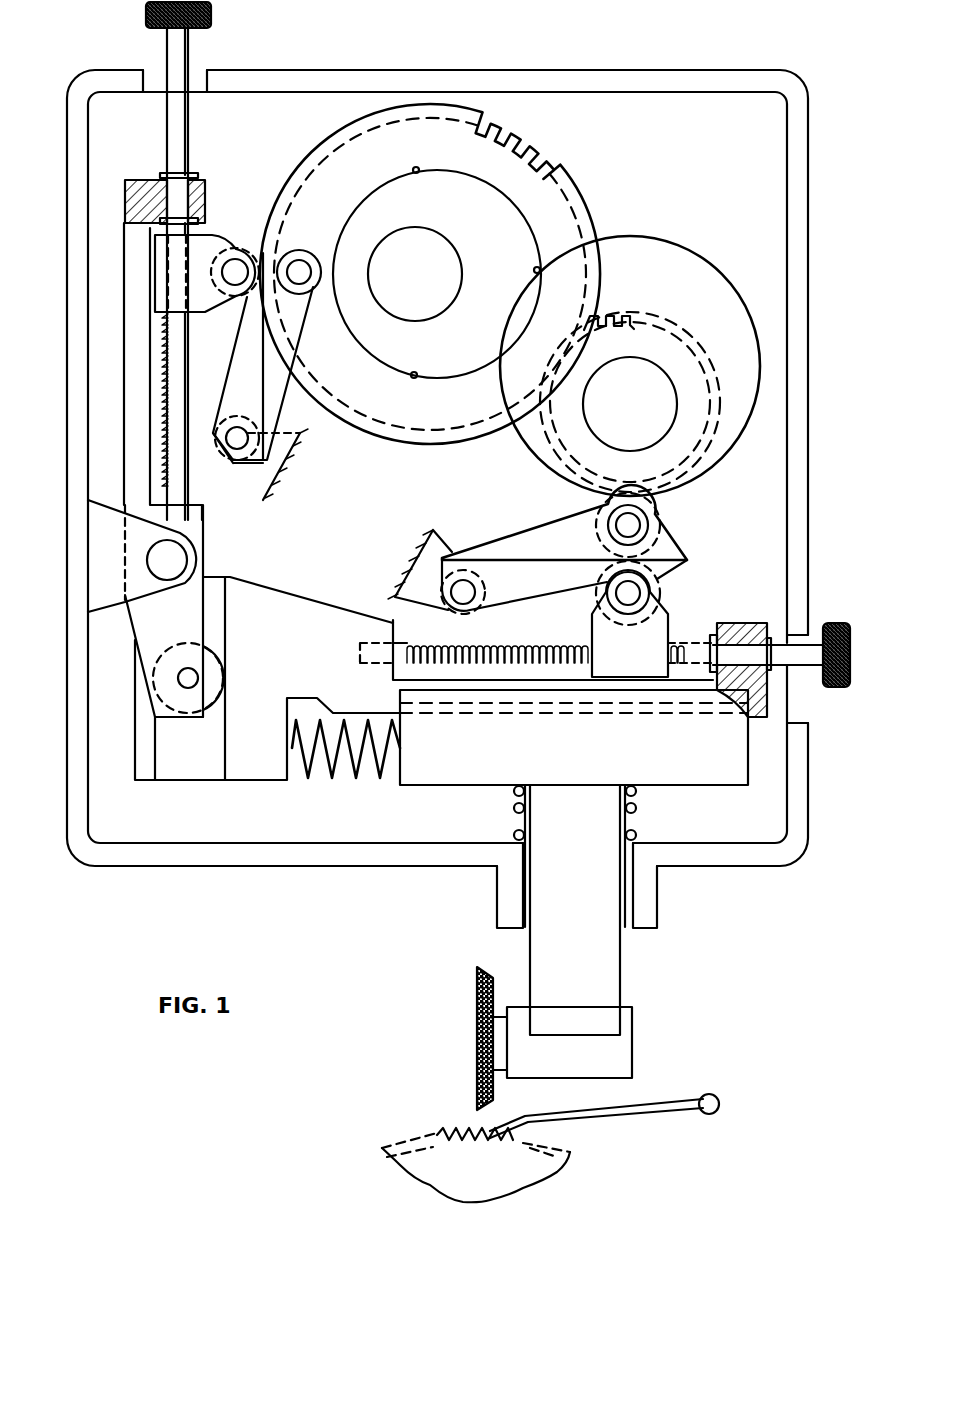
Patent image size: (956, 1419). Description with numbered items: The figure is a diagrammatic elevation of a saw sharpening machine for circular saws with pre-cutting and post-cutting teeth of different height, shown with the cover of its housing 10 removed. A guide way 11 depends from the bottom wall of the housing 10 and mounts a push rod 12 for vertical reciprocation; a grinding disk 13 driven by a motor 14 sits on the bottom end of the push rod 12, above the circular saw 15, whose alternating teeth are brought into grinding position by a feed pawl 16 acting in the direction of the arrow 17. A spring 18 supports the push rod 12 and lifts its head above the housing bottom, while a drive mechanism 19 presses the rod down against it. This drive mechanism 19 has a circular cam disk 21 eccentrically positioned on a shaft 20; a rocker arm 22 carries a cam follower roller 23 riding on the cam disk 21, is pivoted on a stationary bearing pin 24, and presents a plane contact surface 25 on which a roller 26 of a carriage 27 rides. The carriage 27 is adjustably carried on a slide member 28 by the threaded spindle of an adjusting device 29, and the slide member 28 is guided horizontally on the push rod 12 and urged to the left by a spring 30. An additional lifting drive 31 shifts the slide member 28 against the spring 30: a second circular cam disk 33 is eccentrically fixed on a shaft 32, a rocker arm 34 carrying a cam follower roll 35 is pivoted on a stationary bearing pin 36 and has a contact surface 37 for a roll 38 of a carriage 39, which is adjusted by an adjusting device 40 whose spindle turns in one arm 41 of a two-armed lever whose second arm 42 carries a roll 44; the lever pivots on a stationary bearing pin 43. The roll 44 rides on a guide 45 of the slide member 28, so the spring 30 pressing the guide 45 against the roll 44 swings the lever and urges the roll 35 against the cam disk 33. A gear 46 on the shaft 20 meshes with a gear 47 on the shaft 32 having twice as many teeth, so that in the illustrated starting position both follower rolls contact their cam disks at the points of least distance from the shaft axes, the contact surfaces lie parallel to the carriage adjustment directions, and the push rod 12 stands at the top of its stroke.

The housing 10 is at (676, 80).
The guide way 11 is at (625, 897).
The push rod 12 is at (600, 972).
The grinding disk 13 is at (477, 1010).
The motor 14 is at (625, 1042).
The circular saw 15 is at (380, 1157).
The feed pawl 16 is at (672, 1100).
The arrow 17 is at (690, 1132).
The spring 18 is at (645, 812).
The drive mechanism 19 is at (680, 508).
The shaft 20 is at (630, 404).
The circular cam disk 21 is at (697, 254).
The rocker arm 22 is at (510, 548).
The cam follower roller 23 is at (613, 503).
The bearing pin 24 is at (460, 598).
The contact surface 25 is at (520, 568).
The roller 26 is at (653, 585).
The carriage 27 is at (602, 627).
The slide member 28 is at (296, 612).
The adjusting device 29 is at (698, 650).
The spring 30 is at (324, 786).
The additional lifting drive 31 is at (318, 452).
The shaft 32 is at (410, 158).
The circular cam disk 33 is at (512, 222).
The rocker arm 34 is at (237, 388).
The cam follower roll 35 is at (292, 250).
The bearing pin 36 is at (238, 455).
The contact surface 37 is at (263, 343).
The roll 38 is at (240, 302).
The carriage 39 is at (206, 246).
The adjusting device 40 is at (180, 122).
The arm of two-armed lever 41 is at (138, 178).
The second arm of two-armed lever 42 is at (148, 620).
The bearing pin 43 is at (175, 560).
The roll 44 is at (213, 682).
The guide 45 is at (222, 753).
The gear 46 is at (620, 316).
The gear 47 is at (575, 204).